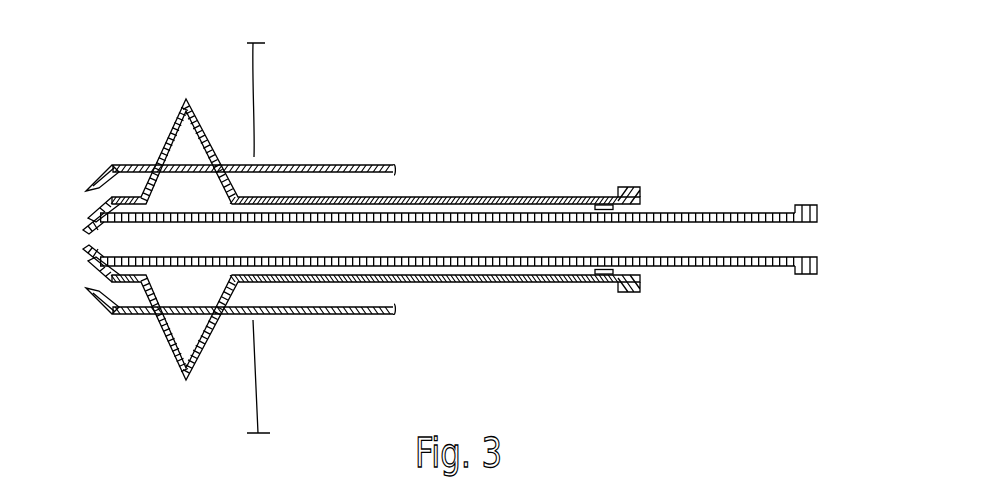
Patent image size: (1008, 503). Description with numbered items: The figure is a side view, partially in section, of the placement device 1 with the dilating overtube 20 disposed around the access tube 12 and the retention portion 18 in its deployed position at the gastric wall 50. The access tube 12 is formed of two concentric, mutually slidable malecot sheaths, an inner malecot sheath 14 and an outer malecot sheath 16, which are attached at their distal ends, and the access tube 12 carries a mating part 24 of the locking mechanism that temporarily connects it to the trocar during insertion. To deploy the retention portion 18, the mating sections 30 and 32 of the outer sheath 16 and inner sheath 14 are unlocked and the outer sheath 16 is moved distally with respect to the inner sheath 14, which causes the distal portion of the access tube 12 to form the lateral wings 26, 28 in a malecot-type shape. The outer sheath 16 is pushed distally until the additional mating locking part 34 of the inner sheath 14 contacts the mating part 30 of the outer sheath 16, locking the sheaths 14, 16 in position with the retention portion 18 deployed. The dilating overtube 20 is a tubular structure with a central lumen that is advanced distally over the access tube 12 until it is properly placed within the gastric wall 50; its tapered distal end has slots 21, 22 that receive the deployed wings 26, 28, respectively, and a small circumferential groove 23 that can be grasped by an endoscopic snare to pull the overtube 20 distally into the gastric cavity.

The placement device 1 is at (517, 140).
The access tube 12 is at (94, 268).
The inner malecot sheath 14 is at (81, 225).
The outer malecot sheath 16 is at (103, 204).
The retention portion 18 is at (181, 377).
The dilating overtube 20 is at (280, 163).
The slot 21 is at (147, 158).
The slot 22 is at (118, 316).
The circumferential groove 23 is at (120, 169).
The mating part 24 is at (820, 268).
The lateral wing 26 is at (188, 98).
The lateral wing 28 is at (212, 345).
The mating section 30 is at (638, 180).
The mating section 32 is at (820, 206).
The mating locking part 34 is at (600, 277).
The gastric wall 50 is at (253, 68).